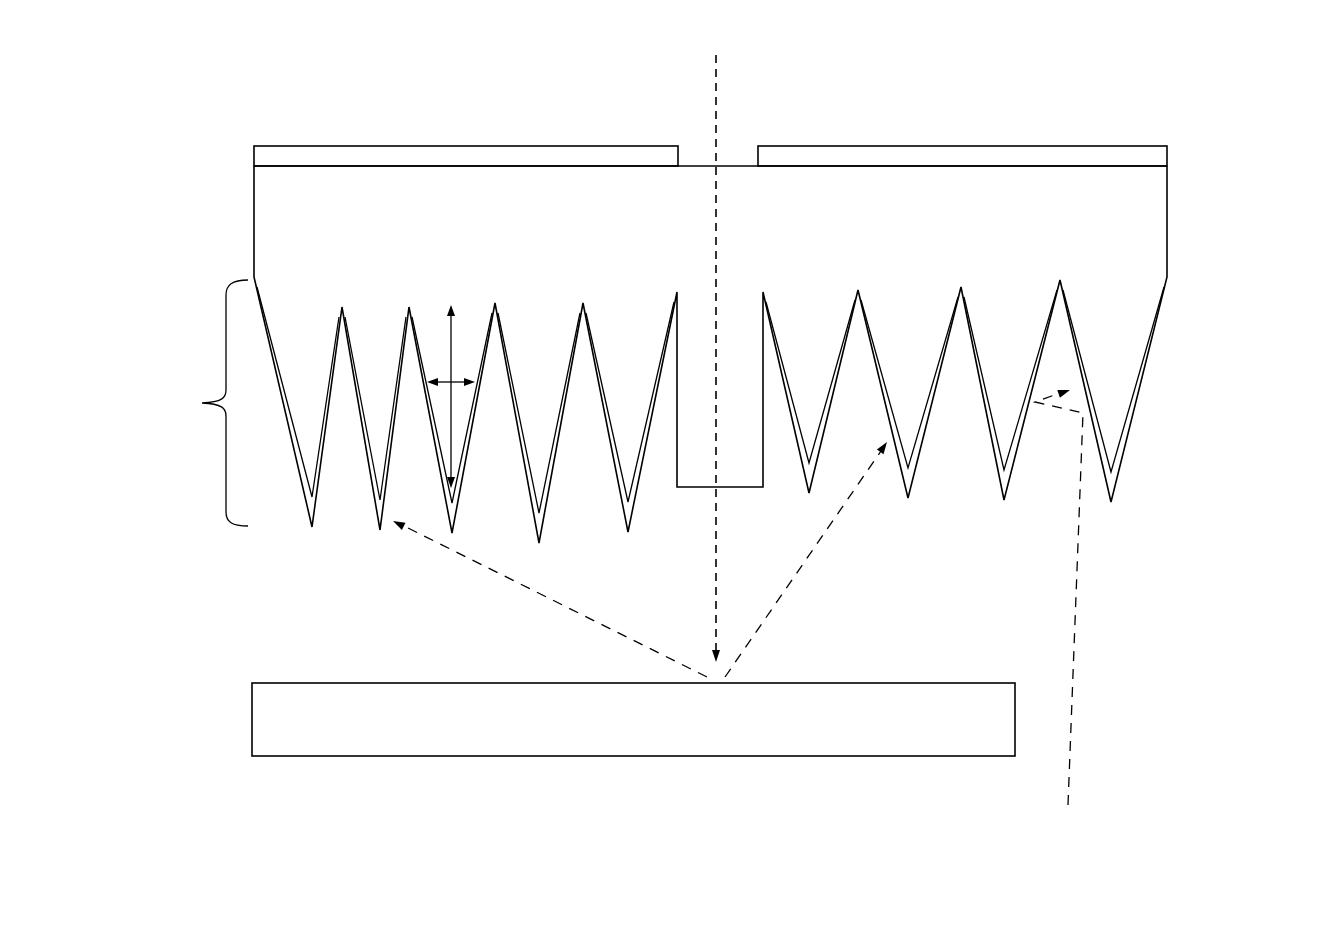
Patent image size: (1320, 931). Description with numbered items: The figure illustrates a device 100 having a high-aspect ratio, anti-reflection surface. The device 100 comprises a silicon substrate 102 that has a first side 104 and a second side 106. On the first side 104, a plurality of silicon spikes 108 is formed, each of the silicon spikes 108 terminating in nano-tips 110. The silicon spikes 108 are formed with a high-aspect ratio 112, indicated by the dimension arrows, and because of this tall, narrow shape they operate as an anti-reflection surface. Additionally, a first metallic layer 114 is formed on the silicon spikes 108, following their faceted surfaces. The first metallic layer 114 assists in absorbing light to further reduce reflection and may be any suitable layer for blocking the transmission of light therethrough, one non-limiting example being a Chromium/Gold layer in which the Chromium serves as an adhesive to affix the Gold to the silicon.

The device 100 is at (250, 102).
The silicon substrate 102 is at (1112, 241).
The first side 104 is at (197, 403).
The second side 106 is at (1160, 167).
The silicon spikes 108 is at (1103, 357).
The nano-tips 110 is at (1110, 453).
The high-aspect ratio 112 is at (427, 373).
The first metallic layer 114 is at (908, 482).